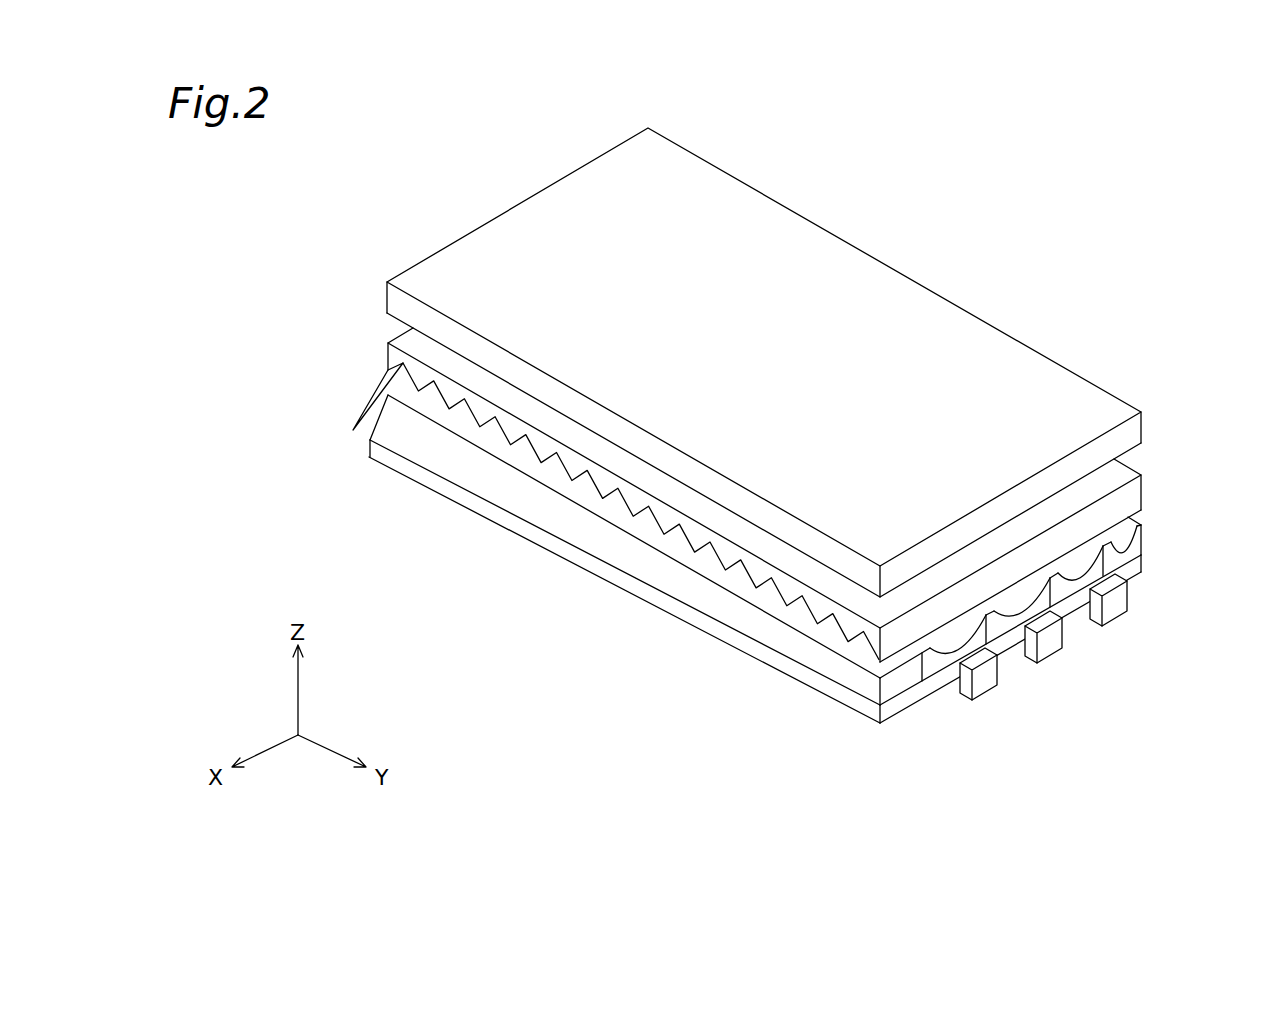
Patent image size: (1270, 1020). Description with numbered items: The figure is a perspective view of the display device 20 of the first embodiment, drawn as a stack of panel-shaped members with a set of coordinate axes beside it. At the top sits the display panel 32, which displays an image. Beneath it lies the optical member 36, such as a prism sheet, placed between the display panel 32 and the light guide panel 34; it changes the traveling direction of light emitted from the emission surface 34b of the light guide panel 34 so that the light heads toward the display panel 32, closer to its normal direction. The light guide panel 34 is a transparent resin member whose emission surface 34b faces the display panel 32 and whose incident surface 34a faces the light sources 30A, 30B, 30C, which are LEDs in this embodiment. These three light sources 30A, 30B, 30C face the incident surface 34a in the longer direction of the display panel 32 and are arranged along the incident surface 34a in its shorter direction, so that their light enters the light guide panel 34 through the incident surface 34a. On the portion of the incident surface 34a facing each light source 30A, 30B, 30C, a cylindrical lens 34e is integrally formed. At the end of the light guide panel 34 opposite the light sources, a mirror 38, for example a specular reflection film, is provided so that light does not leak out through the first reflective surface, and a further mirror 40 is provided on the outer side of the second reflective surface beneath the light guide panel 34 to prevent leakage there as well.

The display device 20 is at (963, 252).
The display panel 32 is at (735, 328).
The optical member 36 is at (387, 348).
The mirror 38 is at (360, 418).
The light guide panel 34 is at (413, 447).
The incident surface 34a is at (1137, 548).
The emission surface 34b is at (612, 513).
The cylindrical lens 34e is at (938, 673).
The mirror 40 is at (500, 525).
The light source 30A is at (983, 686).
The light source 30B is at (1047, 644).
The light source 30C is at (1110, 606).